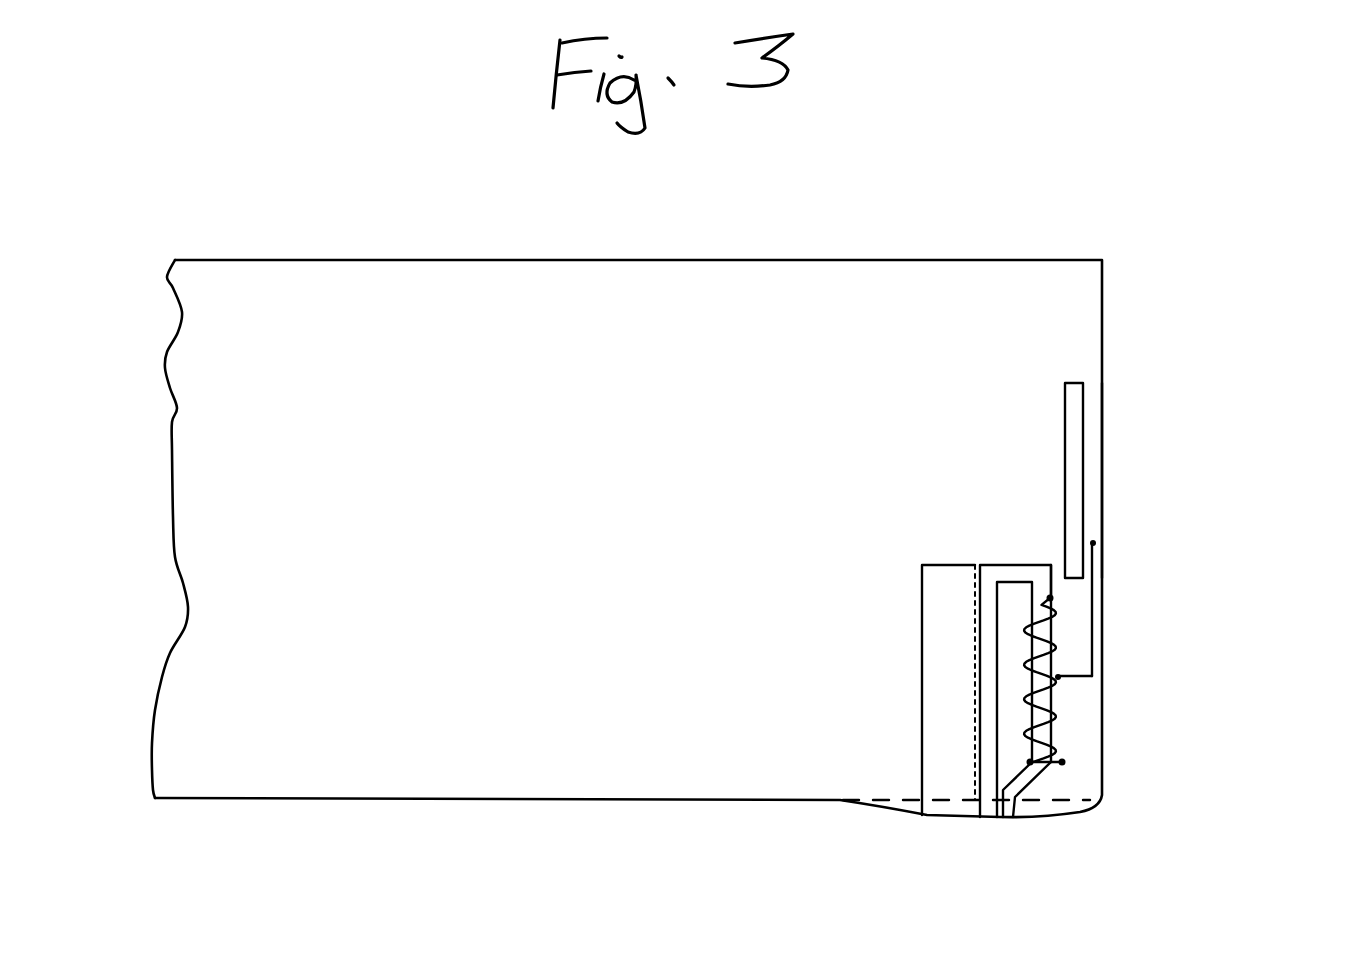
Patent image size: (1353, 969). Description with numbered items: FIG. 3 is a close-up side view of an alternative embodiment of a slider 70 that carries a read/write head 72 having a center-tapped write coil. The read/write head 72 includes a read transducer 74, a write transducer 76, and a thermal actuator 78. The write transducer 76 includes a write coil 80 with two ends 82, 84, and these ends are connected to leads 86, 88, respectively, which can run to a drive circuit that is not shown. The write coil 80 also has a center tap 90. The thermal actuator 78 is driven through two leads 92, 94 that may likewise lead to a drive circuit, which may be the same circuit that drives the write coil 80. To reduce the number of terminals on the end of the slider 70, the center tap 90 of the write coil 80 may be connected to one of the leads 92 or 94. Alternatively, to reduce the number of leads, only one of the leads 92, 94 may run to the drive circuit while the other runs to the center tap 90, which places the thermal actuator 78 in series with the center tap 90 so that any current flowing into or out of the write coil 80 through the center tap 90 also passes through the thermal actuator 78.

The slider 70 is at (320, 230).
The read/write head 72 is at (982, 523).
The read transducer 74 is at (913, 722).
The write transducer 76 is at (1063, 727).
The thermal actuator 78 is at (1095, 488).
The write coil 80 is at (1053, 695).
The end 82 is at (1050, 598).
The end 84 is at (1062, 762).
The lead 86 is at (1050, 598).
The lead 88 is at (1062, 762).
The center tap 90 is at (1058, 677).
The lead 92 is at (1083, 405).
The lead 94 is at (1093, 543).